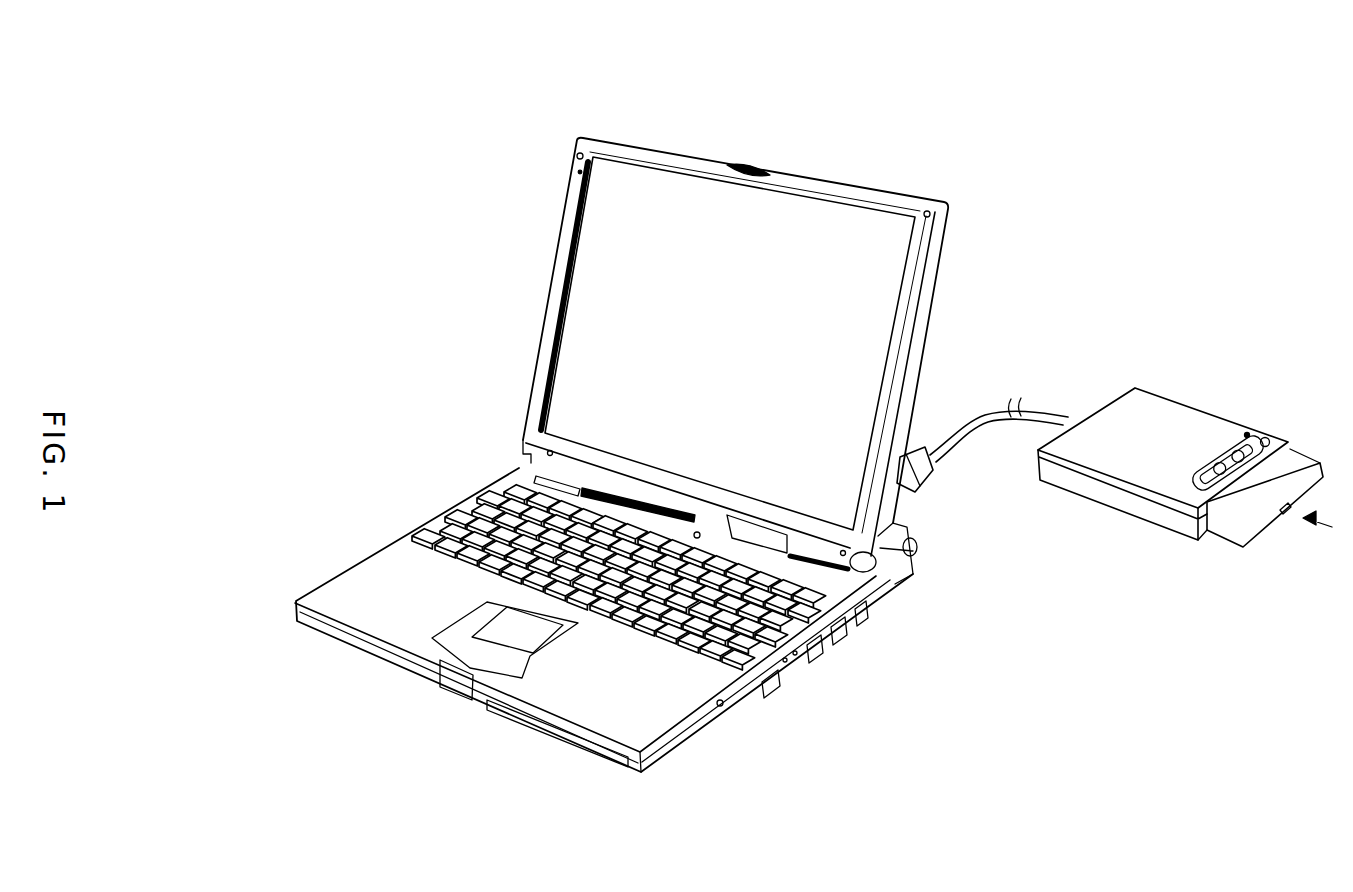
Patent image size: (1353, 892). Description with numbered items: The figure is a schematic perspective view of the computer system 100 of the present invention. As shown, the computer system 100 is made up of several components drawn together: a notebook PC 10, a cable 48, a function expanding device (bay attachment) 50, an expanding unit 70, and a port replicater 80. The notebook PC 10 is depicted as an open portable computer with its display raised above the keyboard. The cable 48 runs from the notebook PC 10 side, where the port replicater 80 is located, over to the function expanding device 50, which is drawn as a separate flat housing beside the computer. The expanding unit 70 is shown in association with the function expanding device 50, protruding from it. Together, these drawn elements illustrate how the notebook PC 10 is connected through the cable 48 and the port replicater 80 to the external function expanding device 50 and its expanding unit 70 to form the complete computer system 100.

The computer system 100 is at (950, 120).
The notebook PC 10 is at (500, 359).
The cable 48 is at (1003, 391).
The function expanding device 50 is at (1194, 376).
The expanding unit 70 is at (1190, 588).
The port replicater 80 is at (936, 543).